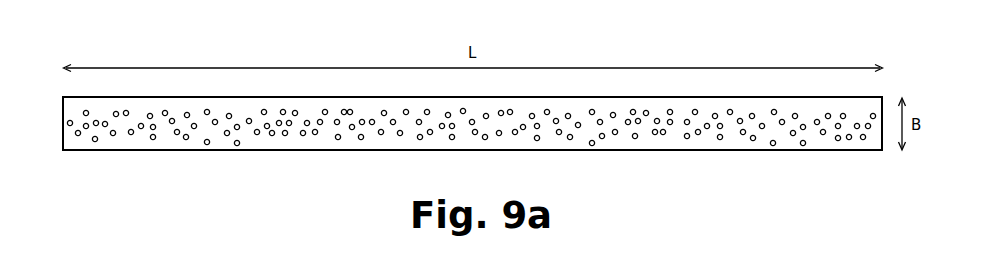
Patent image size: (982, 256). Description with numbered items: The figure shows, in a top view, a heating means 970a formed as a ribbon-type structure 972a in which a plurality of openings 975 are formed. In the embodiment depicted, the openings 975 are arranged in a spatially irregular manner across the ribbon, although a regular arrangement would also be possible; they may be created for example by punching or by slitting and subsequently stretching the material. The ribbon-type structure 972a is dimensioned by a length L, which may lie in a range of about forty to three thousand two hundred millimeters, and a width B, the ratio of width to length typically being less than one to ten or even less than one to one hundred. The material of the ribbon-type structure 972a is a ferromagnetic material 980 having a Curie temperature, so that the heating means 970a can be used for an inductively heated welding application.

The heating means 970a is at (115, 44).
The ribbon-type structure 972a is at (718, 150).
The openings 975 is at (655, 136).
The ferromagnetic material 980 is at (248, 145).